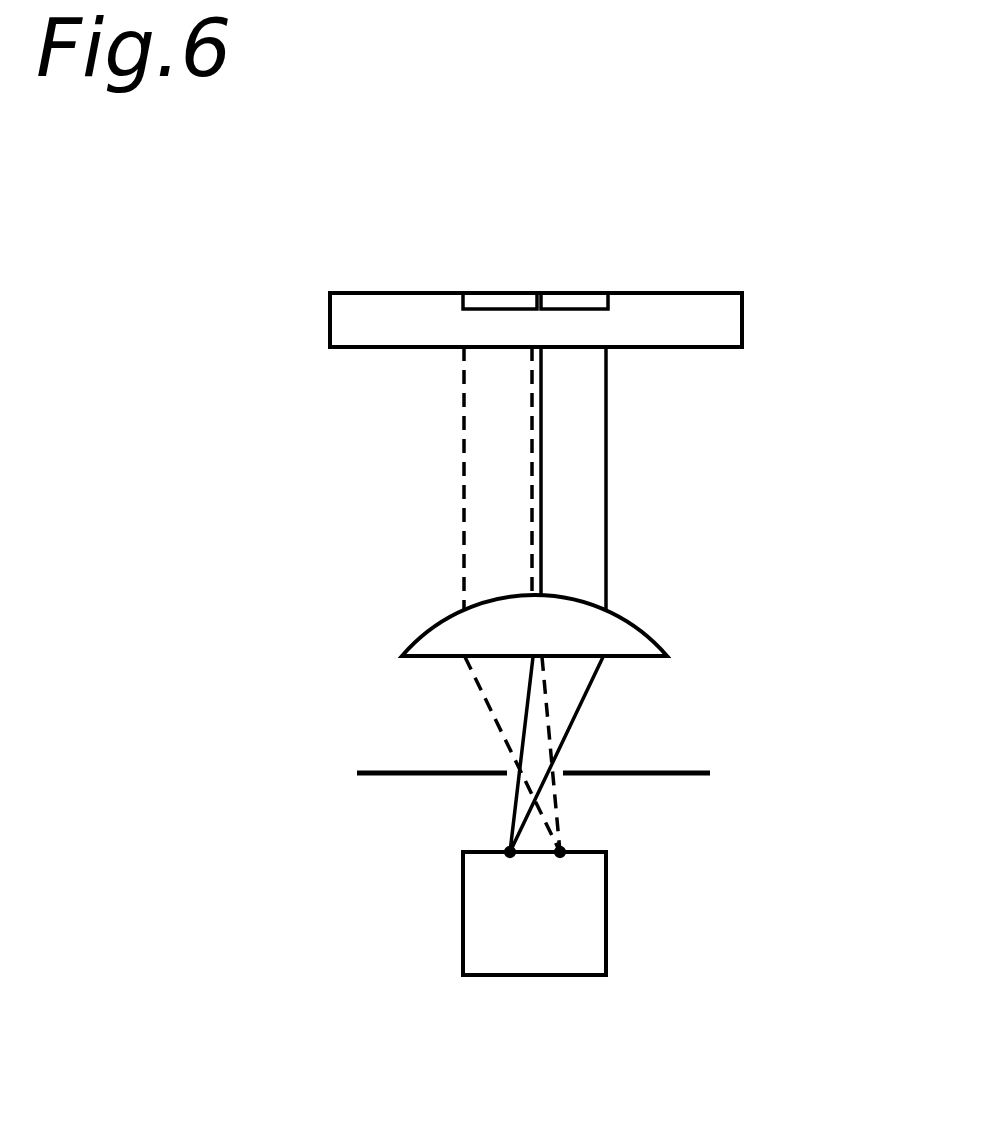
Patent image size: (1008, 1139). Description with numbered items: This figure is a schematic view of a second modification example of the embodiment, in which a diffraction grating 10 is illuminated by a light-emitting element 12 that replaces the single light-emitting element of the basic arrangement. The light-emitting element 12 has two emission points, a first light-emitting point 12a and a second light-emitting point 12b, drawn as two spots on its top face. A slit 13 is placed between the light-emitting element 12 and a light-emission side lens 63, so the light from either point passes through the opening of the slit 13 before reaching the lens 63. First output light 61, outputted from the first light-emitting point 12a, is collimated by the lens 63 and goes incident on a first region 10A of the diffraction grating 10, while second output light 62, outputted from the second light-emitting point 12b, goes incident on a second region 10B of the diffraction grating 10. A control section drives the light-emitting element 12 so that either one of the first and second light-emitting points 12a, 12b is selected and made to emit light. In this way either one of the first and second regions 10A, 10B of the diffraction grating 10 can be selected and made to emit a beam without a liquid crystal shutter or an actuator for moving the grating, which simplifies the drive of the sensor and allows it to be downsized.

The diffraction grating 10 is at (743, 323).
The first region 10A is at (483, 293).
The second region 10B is at (590, 293).
The first output light 61 is at (464, 478).
The second output light 62 is at (606, 482).
The light-emission side lens 63 is at (647, 632).
The slit 13 is at (712, 773).
The light-emitting element 12 is at (606, 935).
The first light-emitting point 12a is at (560, 852).
The second light-emitting point 12b is at (510, 852).